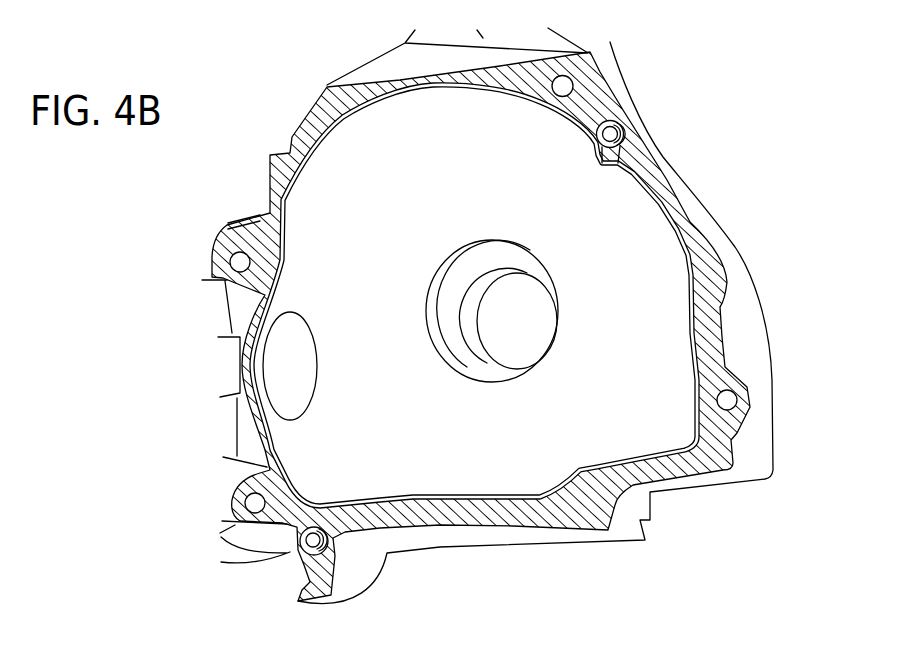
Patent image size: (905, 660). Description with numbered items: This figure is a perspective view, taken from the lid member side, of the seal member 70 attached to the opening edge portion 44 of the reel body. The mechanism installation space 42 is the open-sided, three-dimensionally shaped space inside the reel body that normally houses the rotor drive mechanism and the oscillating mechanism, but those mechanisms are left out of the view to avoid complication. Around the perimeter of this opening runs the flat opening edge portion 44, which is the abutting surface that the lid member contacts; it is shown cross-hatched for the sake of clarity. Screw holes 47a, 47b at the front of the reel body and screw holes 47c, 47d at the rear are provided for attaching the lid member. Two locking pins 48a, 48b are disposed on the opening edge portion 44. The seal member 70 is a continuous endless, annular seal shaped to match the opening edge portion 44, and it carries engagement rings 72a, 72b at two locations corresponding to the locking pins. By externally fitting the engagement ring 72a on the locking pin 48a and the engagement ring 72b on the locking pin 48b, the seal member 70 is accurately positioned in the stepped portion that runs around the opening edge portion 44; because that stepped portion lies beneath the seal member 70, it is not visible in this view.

The mechanism installation space 42 is at (617, 268).
The opening edge portion 44 is at (723, 343).
The screw hole 47a is at (230, 260).
The screw hole 47b is at (243, 503).
The screw hole 47c is at (580, 80).
The screw hole 47d is at (738, 399).
The locking pin 48a is at (622, 123).
The locking pin 48b is at (300, 556).
The seal member 70 is at (500, 504).
The engagement ring 72a is at (626, 136).
The engagement ring 72b is at (335, 550).